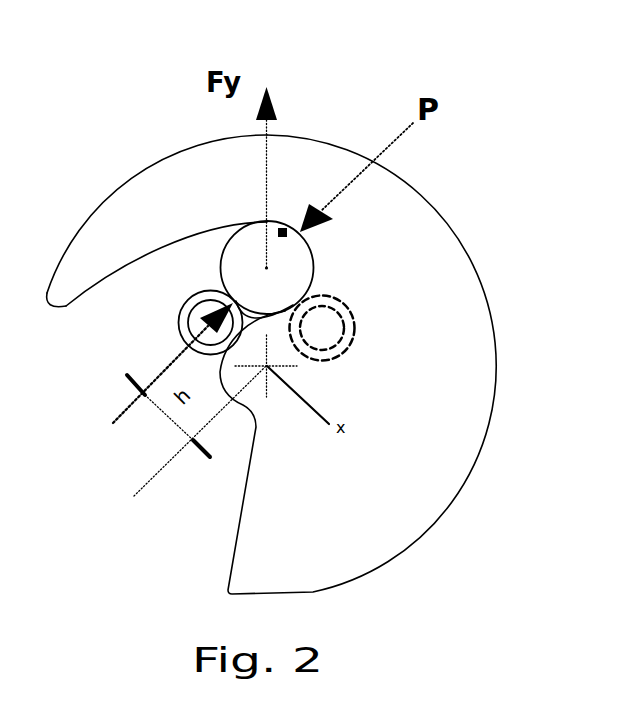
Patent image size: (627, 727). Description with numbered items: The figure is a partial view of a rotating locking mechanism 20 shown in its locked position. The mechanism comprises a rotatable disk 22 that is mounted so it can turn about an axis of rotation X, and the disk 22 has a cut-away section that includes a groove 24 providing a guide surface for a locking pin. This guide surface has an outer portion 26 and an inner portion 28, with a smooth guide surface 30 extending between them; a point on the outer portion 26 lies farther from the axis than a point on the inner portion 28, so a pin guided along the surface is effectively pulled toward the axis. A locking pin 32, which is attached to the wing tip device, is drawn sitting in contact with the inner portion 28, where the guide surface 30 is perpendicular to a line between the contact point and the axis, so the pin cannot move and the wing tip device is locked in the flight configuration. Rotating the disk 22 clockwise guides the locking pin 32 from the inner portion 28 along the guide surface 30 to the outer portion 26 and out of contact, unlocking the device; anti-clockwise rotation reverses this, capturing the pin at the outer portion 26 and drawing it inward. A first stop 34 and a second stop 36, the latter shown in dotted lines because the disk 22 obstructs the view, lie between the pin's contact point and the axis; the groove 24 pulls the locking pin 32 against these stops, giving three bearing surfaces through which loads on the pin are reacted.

The locking mechanism 20 is at (311, 298).
The rotatable disk 22 is at (416, 268).
The groove 24 is at (162, 278).
The outer portion 26 is at (83, 298).
The inner portion 28 is at (283, 228).
The guide surface 30 is at (117, 270).
The locking pin 32 is at (287, 260).
The first stop 34 is at (233, 303).
The second stop 36 is at (355, 313).